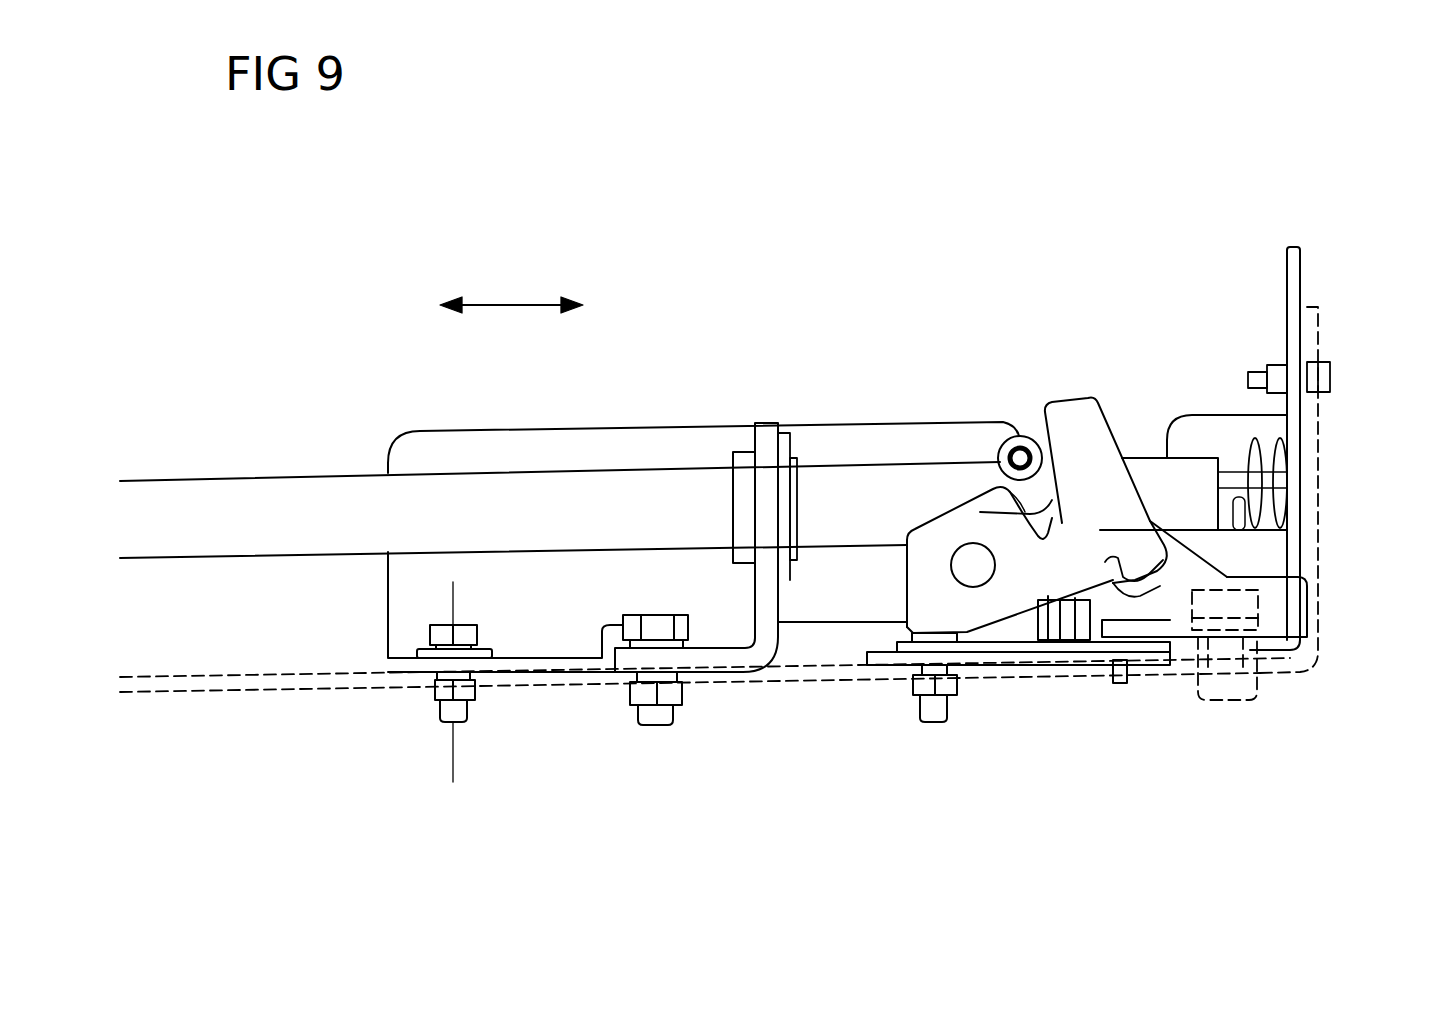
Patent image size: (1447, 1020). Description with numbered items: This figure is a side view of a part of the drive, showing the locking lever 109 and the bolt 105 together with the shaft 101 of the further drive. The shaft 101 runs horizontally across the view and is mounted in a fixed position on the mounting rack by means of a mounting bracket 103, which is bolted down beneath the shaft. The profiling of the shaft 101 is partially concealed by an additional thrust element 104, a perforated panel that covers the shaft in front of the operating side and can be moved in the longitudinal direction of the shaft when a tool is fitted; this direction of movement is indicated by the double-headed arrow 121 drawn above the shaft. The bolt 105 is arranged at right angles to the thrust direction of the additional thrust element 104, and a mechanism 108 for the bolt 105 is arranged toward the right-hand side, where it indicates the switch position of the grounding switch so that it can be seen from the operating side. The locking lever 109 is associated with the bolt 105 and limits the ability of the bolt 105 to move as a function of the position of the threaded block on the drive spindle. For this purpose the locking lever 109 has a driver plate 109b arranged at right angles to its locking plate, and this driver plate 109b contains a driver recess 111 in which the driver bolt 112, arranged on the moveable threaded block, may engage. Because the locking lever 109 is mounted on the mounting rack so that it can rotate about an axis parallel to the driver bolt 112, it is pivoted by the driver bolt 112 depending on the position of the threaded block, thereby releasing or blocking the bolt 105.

The shaft 101 is at (286, 478).
The arrow 121 is at (492, 302).
The mounting bracket 103 is at (788, 653).
The bolt 105 is at (980, 512).
The driver recess 111 is at (1077, 475).
The driver bolt 112 is at (1022, 436).
The driver plate 109b is at (1112, 440).
The additional thrust element 104 is at (1228, 420).
The mechanism 108 is at (1303, 358).
The locking lever 109 is at (1017, 698).